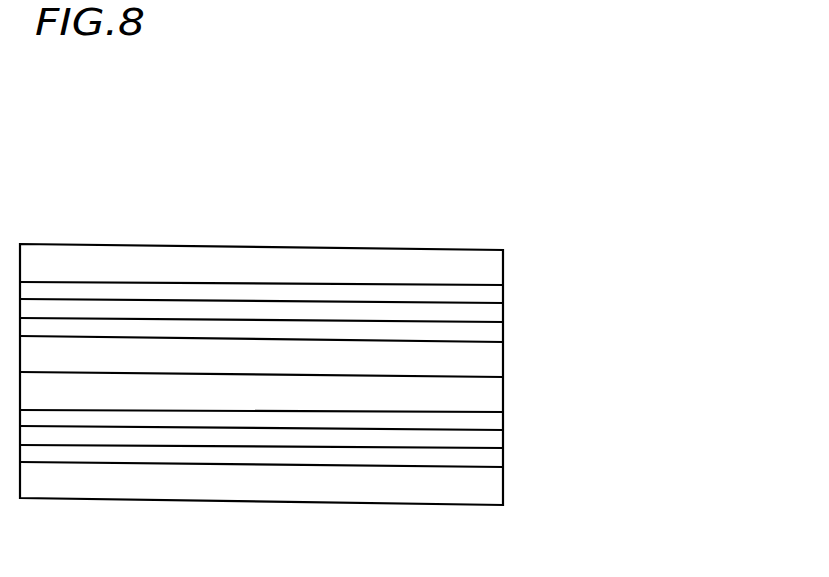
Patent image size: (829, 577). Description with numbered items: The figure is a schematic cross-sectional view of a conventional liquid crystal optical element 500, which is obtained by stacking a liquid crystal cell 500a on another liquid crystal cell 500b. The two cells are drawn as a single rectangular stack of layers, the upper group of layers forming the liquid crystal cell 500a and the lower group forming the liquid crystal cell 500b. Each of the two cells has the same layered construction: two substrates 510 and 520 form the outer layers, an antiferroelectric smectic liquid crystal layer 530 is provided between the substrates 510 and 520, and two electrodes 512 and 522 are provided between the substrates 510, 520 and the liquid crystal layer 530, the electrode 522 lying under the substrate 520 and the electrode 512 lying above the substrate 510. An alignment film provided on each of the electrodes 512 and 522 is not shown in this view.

The liquid crystal optical element 500 is at (376, 204).
The liquid crystal cell 500a is at (692, 255).
The liquid crystal cell 500b is at (690, 384).
The substrate 520 is at (488, 263).
The electrode 522 is at (488, 297).
The antiferroelectric smectic liquid crystal layer 530 is at (488, 313).
The electrode 512 is at (488, 337).
The substrate 510 is at (488, 368).